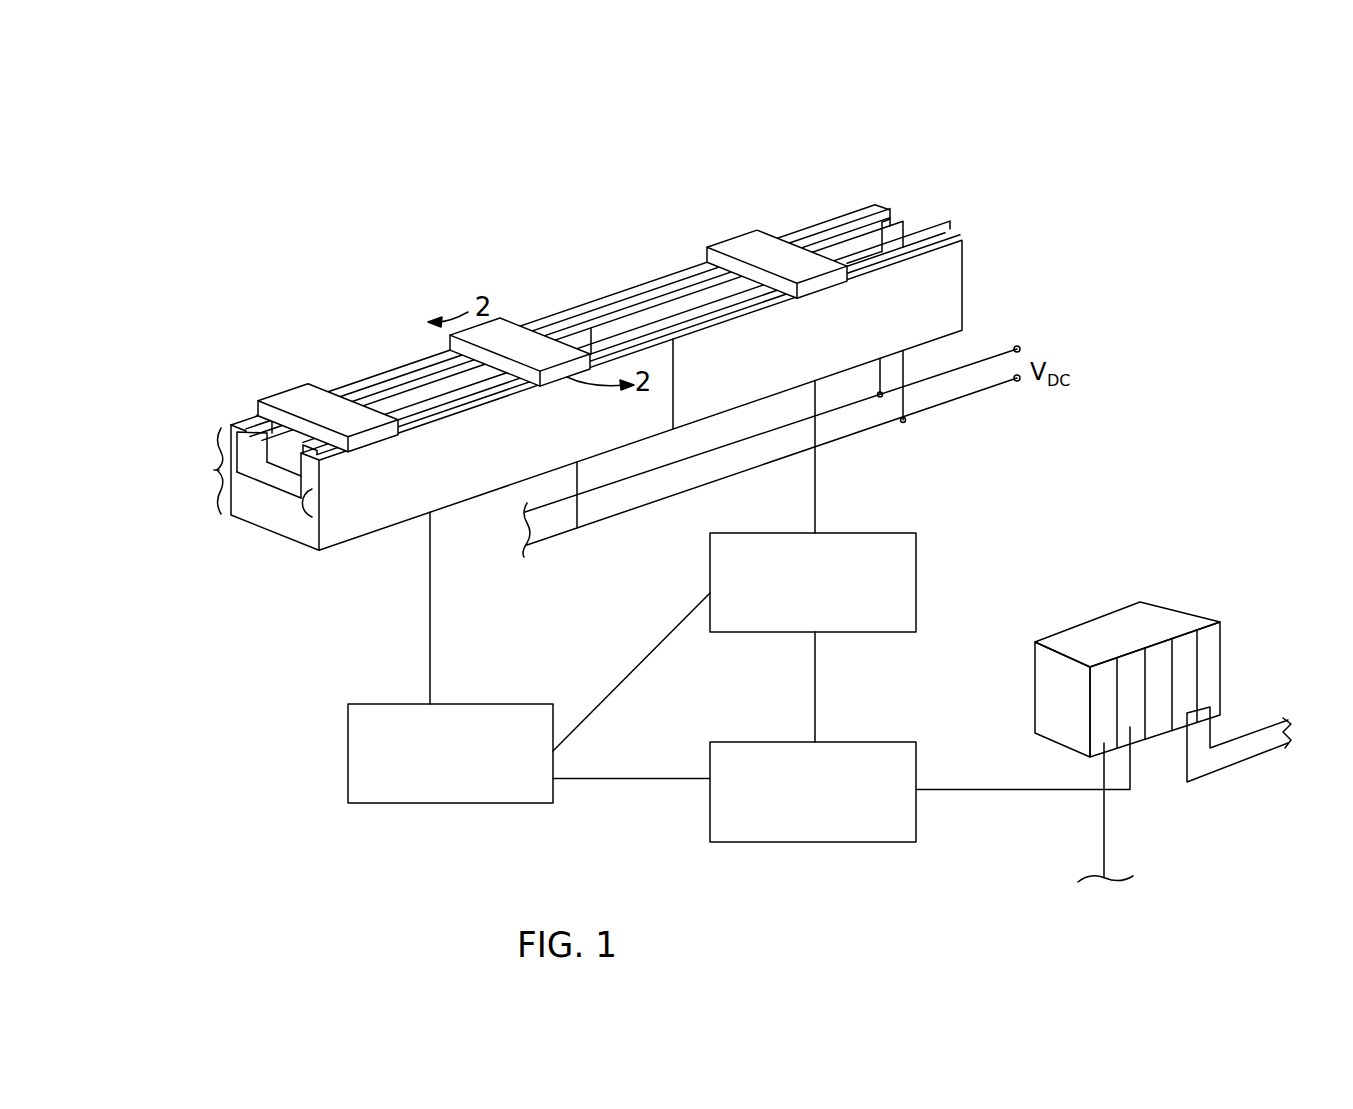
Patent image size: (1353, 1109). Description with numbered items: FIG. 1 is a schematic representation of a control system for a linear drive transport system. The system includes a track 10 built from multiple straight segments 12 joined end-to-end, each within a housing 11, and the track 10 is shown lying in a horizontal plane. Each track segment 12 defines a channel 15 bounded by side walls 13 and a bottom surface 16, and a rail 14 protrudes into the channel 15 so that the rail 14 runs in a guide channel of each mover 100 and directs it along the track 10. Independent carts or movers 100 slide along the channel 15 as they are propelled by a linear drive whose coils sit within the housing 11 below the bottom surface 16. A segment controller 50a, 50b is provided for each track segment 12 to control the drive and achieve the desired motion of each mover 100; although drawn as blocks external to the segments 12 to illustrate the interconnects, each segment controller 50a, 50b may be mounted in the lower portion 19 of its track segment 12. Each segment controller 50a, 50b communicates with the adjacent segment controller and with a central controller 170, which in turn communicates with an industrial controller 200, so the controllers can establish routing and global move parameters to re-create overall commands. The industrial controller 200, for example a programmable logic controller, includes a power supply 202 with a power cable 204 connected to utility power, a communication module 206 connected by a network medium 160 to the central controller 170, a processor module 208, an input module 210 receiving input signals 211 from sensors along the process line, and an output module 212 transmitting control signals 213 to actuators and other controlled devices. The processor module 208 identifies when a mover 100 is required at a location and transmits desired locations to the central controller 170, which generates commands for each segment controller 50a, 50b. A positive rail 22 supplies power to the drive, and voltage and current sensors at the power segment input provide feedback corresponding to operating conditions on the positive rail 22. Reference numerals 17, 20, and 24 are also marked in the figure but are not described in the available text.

The track 10 is at (930, 150).
The housing 11 is at (496, 453).
The track segment 12 is at (635, 290).
The side walls of the channel 13 is at (612, 327).
The rail 14 is at (815, 230).
The channel 15 is at (870, 241).
The bottom surface of the channel 16 is at (277, 477).
The first end of track 17 is at (212, 447).
The lower portion of the track segment 19 is at (212, 492).
The power supply system 20 is at (1075, 315).
The positive rail 22 is at (990, 340).
The negative DC bus line 24 is at (985, 392).
The segment controller 50a is at (460, 703).
The segment controller 50b is at (880, 532).
The mover 100 is at (738, 247).
The network medium 160 is at (628, 674).
The central controller 170 is at (743, 843).
The industrial controller 200 is at (1147, 692).
The power supply 202 is at (1098, 668).
The power cable 204 is at (1103, 845).
The communication module 206 is at (1128, 662).
The processor module 208 is at (1160, 650).
The input module 210 is at (1187, 650).
The input signals 211 is at (1232, 770).
The output module 212 is at (1222, 633).
The control signals 213 is at (1250, 737).